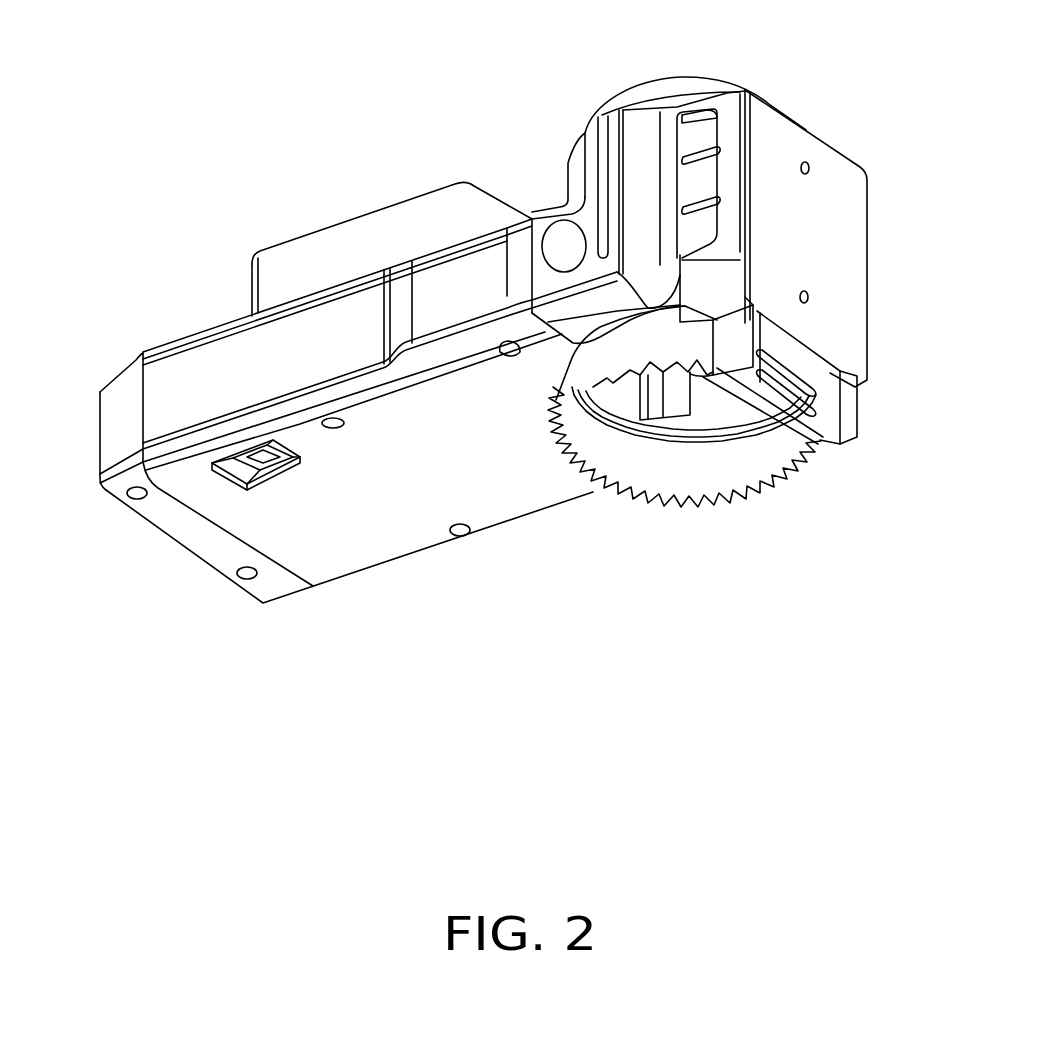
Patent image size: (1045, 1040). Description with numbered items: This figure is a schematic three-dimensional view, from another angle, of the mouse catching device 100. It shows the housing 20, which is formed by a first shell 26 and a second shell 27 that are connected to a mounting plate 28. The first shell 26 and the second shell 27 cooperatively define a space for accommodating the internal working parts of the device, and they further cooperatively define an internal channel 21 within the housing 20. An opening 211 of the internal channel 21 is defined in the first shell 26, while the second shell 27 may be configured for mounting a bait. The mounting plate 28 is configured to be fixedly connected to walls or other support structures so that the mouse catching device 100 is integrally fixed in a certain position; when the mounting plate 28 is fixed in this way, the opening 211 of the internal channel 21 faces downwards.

The mouse catching device 100 is at (305, 68).
The housing 20 is at (135, 370).
The internal channel 21 is at (697, 387).
The opening 211 is at (710, 433).
The first shell 26 is at (362, 558).
The second shell 27 is at (120, 413).
The mounting plate 28 is at (855, 237).